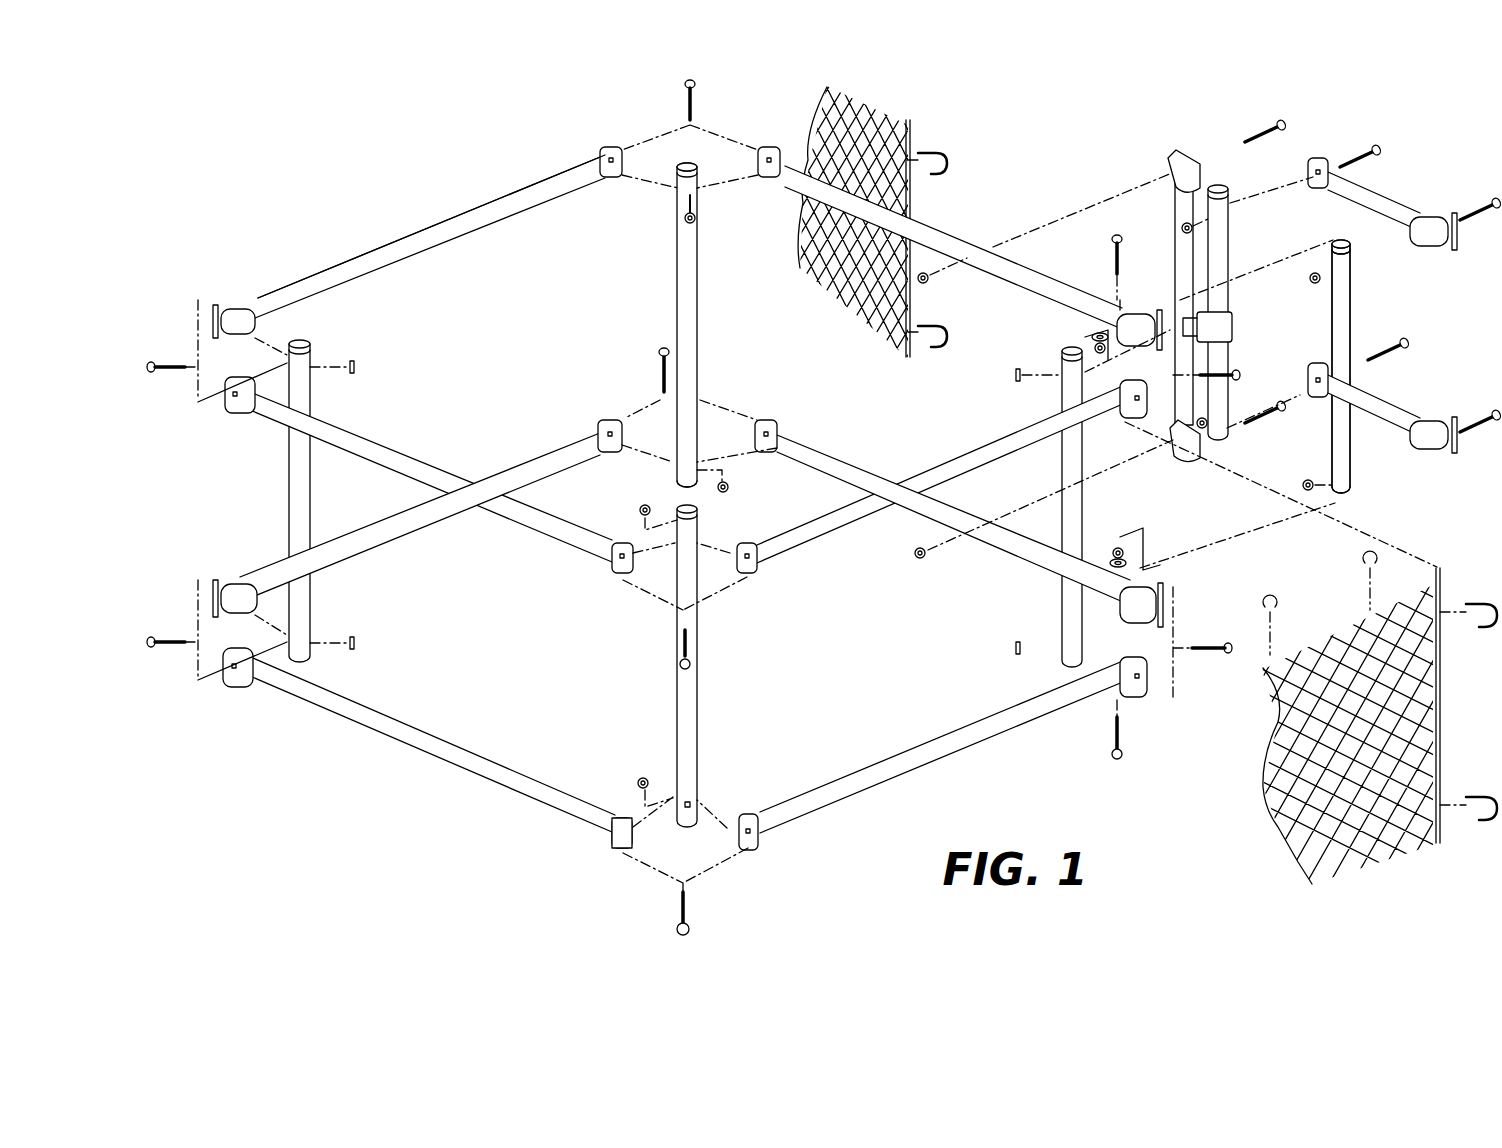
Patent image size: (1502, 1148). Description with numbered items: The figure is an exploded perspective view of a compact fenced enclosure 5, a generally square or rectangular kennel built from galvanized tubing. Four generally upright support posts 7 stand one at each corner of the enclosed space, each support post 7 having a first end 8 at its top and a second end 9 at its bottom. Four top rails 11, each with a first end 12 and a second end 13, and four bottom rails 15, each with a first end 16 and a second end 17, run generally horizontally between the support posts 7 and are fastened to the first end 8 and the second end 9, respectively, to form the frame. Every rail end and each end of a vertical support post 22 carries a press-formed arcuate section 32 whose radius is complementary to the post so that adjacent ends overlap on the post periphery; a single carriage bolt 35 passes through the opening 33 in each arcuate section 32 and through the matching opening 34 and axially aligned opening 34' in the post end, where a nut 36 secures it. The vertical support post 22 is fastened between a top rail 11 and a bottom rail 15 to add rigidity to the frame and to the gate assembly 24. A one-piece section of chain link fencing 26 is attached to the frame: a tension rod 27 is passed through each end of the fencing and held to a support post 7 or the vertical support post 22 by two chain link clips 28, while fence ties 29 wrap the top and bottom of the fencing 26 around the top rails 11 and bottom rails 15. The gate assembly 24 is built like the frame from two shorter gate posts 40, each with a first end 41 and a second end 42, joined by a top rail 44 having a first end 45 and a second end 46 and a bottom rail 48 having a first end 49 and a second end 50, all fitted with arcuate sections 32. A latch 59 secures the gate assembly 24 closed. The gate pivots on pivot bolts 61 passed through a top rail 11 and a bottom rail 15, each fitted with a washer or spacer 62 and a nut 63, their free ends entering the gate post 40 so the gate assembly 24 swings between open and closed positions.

The compact fenced enclosure 5 is at (368, 200).
The support post 7 is at (698, 290).
The first end 8 is at (676, 192).
The second end 9 is at (678, 464).
The top rail 11 is at (312, 282).
The first end 12 is at (600, 165).
The second end 13 is at (252, 304).
The bottom rail 15 is at (420, 521).
The first end 16 is at (592, 437).
The second end 17 is at (592, 818).
The vertical support post 22 is at (1177, 158).
The gate assembly 24 is at (1413, 170).
The chain link fencing 26 is at (1295, 862).
The tension rod 27 is at (1442, 705).
The chain link clip 28 is at (1480, 822).
The fence tie 29 is at (1278, 603).
The arcuate section 32 is at (623, 160).
The opening 33 is at (604, 148).
The opening 34 is at (717, 443).
The opening 34' is at (720, 209).
The carriage bolt 35 is at (165, 375).
The nut 36 is at (362, 366).
The gate post 40 is at (1230, 255).
The first end 41 is at (1351, 265).
The second end 42 is at (1352, 490).
The top rail 44 is at (1382, 201).
The first end 45 is at (1432, 216).
The second end 46 is at (1345, 181).
The bottom rail 48 is at (1385, 397).
The first end 49 is at (1432, 416).
The second end 50 is at (1326, 400).
The latch 59 is at (1234, 325).
The pivot bolt 61 is at (1117, 234).
The washer or spacer 62 is at (1092, 334).
The nut 63 is at (1094, 352).